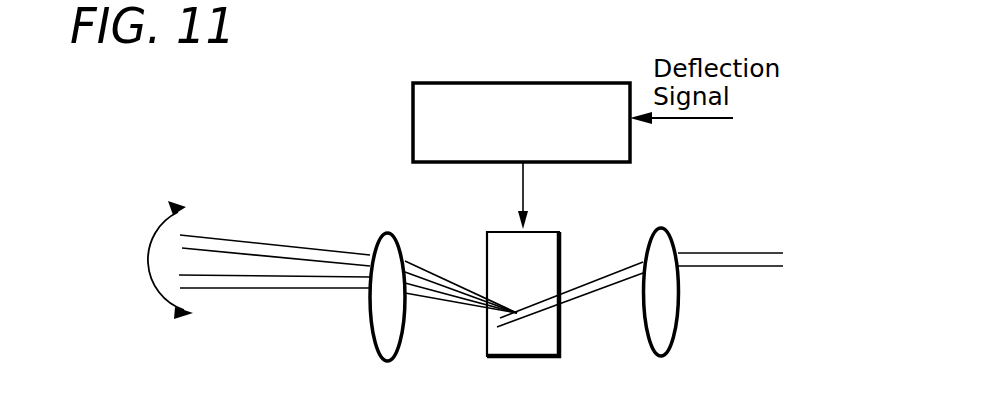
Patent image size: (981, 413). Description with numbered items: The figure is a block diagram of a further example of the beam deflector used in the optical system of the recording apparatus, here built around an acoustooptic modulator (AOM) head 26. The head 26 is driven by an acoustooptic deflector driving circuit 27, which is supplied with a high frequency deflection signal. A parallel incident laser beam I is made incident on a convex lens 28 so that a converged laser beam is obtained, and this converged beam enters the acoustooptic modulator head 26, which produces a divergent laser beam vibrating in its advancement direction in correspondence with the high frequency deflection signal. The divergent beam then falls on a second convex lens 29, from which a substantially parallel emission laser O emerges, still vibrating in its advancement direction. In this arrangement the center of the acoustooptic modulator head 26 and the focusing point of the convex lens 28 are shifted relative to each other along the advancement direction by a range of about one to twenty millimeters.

The acoustooptic modulator head 26 is at (523, 358).
The acoustooptic deflector driving circuit 27 is at (412, 122).
The convex lens 28 is at (679, 313).
The convex lens 29 is at (371, 338).
The emission laser O is at (216, 238).
The parallel incident laser beam I is at (705, 252).